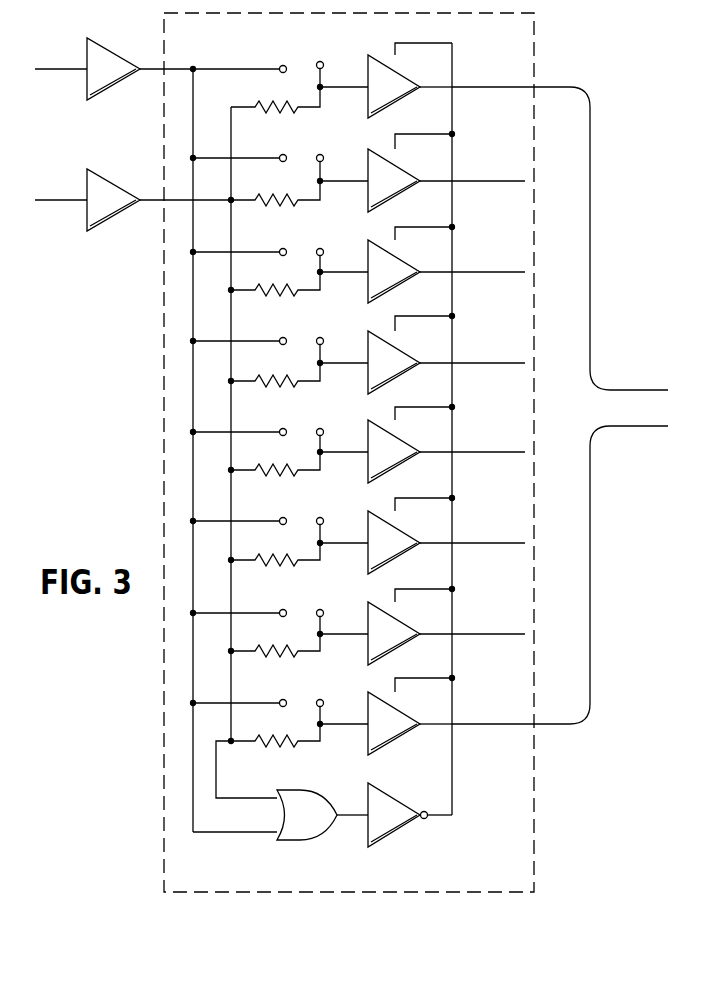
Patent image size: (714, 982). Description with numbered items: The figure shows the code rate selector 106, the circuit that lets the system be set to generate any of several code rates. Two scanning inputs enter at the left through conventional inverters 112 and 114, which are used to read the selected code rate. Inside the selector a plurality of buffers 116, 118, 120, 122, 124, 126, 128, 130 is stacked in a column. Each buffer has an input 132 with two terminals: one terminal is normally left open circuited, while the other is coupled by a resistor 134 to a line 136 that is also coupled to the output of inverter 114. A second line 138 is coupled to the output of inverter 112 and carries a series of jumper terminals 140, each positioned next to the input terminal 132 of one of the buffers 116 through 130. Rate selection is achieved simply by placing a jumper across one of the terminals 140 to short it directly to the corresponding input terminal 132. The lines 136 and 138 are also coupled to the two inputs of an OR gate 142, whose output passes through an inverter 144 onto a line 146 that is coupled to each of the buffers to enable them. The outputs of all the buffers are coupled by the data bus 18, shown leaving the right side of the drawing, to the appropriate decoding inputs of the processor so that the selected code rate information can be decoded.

The data bus 18 is at (618, 398).
The code rate selector 106 is at (262, 895).
The inverter 112 is at (107, 50).
The inverter 114 is at (107, 182).
The buffer 116 is at (400, 75).
The buffer 118 is at (400, 170).
The buffer 120 is at (400, 262).
The buffer 122 is at (400, 352).
The buffer 124 is at (400, 441).
The buffer 126 is at (400, 532).
The buffer 128 is at (400, 623).
The buffer 130 is at (400, 713).
The input 132 is at (324, 66).
The resistor 134 is at (270, 110).
The line 136 is at (231, 308).
The second line 138 is at (200, 388).
The jumper terminals 140 is at (281, 65).
The OR gate 142 is at (312, 832).
The inverter 144 is at (394, 801).
The line 146 is at (453, 792).